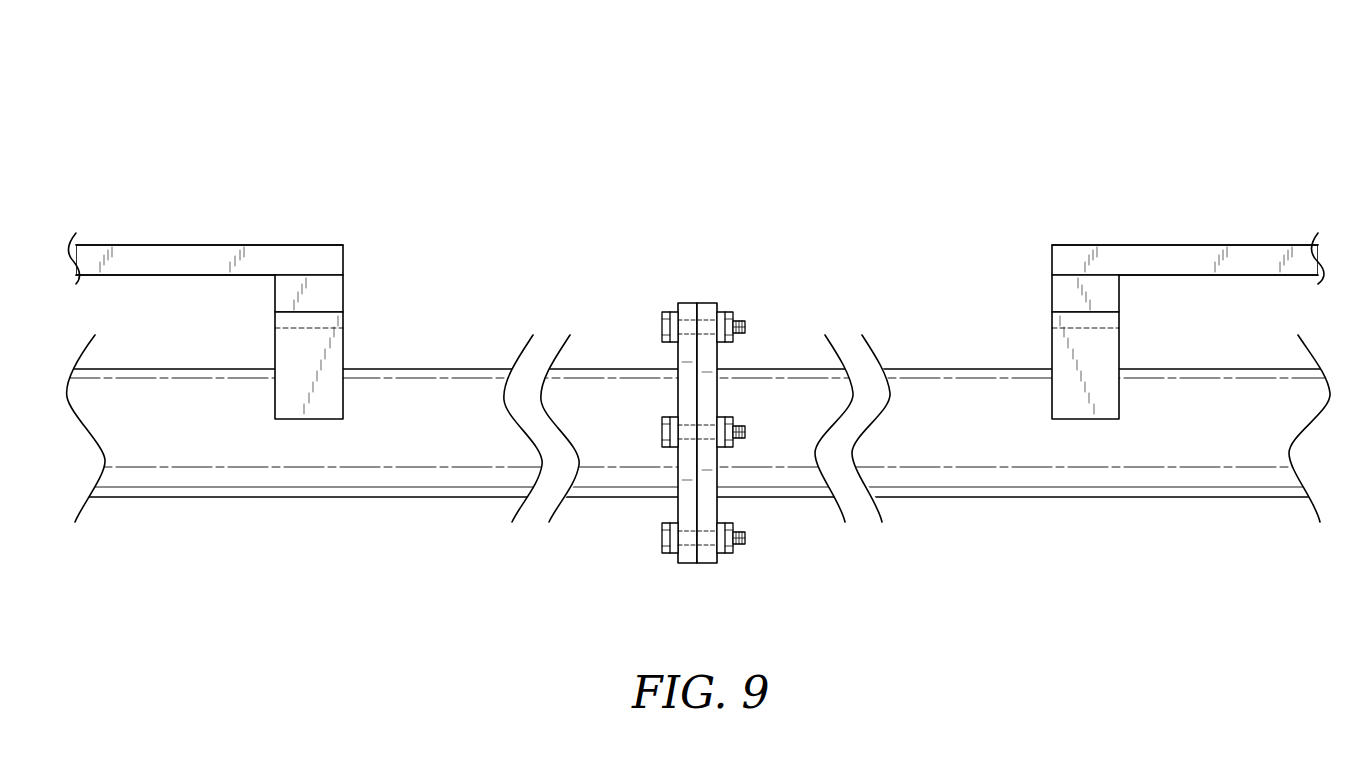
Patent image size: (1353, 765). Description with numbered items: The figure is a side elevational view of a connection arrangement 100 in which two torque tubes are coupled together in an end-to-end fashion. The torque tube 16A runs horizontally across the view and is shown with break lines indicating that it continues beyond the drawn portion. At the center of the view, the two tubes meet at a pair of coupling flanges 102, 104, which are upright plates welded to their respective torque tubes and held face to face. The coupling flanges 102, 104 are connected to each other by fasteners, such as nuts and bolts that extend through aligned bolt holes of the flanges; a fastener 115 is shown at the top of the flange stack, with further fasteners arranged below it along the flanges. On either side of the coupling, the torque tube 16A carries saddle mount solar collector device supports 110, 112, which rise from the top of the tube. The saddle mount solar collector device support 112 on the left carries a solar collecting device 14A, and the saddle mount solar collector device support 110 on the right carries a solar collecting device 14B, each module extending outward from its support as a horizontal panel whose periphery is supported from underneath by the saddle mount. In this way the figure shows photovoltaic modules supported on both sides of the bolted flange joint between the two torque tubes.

The connection arrangement 100 is at (676, 339).
The solar collecting device 14A is at (283, 257).
The solar collecting device 14B is at (1097, 257).
The saddle mount solar collector device support 112 is at (338, 347).
The saddle mount solar collector device support 110 is at (1060, 350).
The torque tube 16A is at (378, 503).
The fastener bolt 115 is at (661, 324).
The coupling flange 104 is at (687, 560).
The coupling flange 102 is at (706, 560).